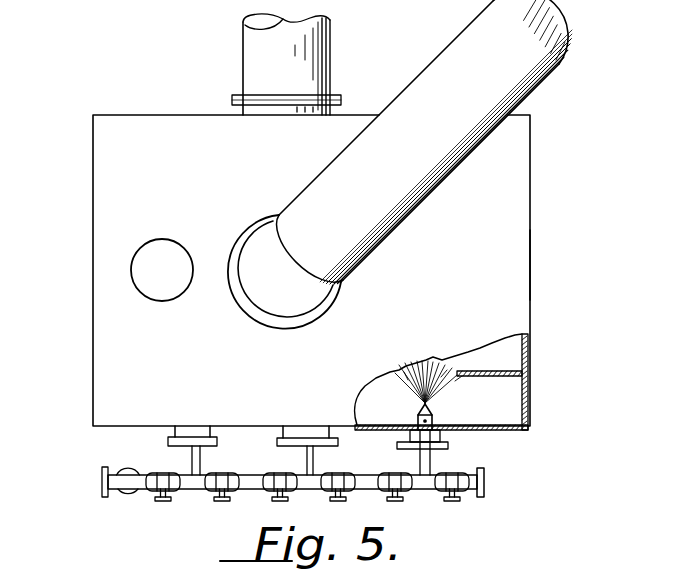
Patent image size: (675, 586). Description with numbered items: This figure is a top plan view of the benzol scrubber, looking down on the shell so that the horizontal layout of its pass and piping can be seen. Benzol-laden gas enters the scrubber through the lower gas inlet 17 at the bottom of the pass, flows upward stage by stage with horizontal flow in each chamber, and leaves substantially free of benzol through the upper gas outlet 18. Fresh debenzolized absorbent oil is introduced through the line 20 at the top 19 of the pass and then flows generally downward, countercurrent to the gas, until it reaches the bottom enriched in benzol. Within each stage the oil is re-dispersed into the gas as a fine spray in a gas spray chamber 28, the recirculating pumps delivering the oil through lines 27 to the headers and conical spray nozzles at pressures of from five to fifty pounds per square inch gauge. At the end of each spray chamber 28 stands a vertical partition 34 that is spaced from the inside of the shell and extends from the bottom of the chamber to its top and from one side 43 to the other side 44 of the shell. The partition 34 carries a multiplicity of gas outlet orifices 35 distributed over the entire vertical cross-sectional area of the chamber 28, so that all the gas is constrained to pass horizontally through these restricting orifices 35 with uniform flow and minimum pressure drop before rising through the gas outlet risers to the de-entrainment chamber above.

The lower gas inlet 17 is at (333, 60).
The upper gas outlet 18 is at (517, 100).
The top of the pass 19 is at (515, 308).
The line 20 is at (128, 496).
The lines 27 is at (476, 493).
The gas spray chamber 28 is at (520, 353).
The vertical partition 34 is at (398, 386).
The gas outlet orifices 35 is at (444, 382).
The side of the shell 43 is at (518, 265).
The other side of the shell 44 is at (105, 278).